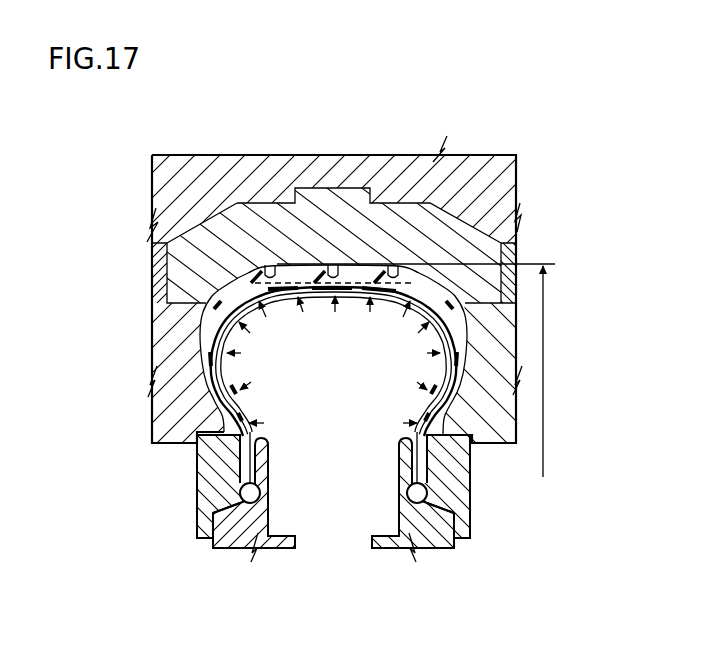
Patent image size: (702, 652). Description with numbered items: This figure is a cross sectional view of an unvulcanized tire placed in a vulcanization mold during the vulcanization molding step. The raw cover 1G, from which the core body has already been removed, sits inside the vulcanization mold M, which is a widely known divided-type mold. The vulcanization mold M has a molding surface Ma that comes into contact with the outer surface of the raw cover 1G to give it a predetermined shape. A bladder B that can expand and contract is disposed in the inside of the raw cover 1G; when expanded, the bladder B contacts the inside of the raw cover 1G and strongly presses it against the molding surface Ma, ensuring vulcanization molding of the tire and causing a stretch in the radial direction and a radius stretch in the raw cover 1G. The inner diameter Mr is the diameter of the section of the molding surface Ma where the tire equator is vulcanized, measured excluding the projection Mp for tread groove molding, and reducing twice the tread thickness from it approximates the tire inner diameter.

The vulcanization mold M is at (243, 128).
The projection for tread groove molding Mp is at (322, 266).
The molding surface Ma is at (213, 296).
The bladder B is at (216, 322).
The raw cover 1G is at (200, 351).
The inner diameter of mold surface Mr is at (426, 370).